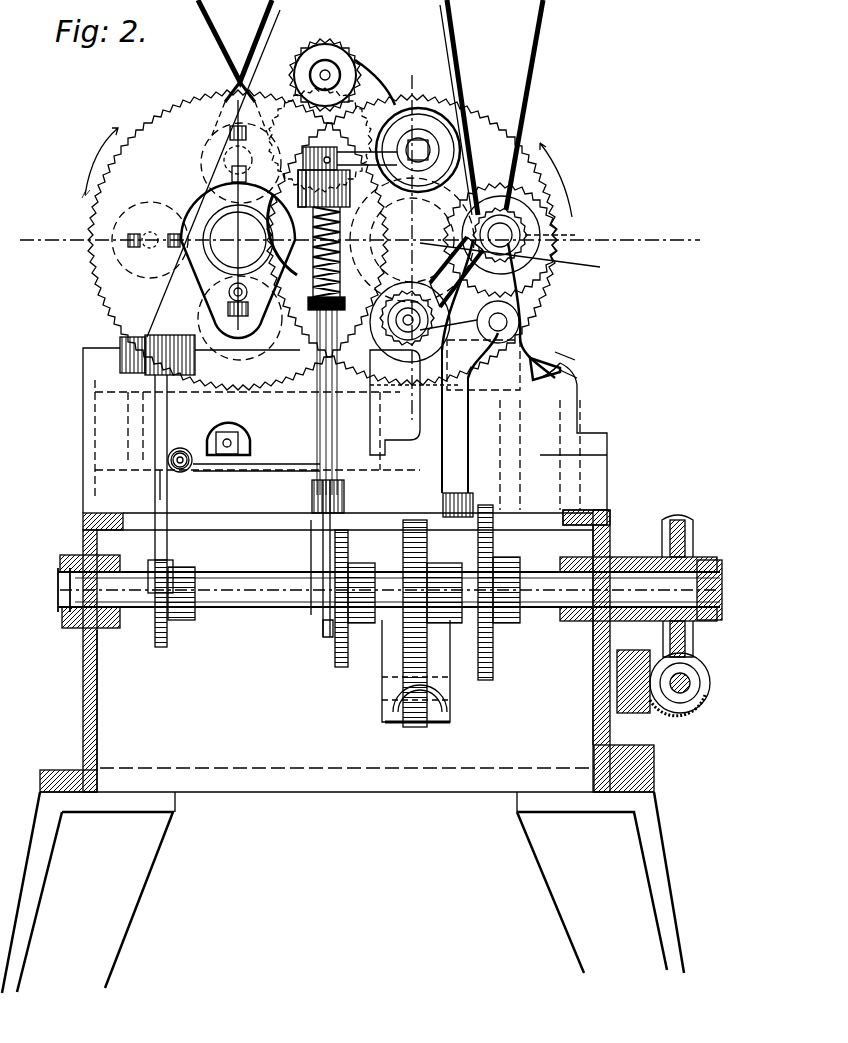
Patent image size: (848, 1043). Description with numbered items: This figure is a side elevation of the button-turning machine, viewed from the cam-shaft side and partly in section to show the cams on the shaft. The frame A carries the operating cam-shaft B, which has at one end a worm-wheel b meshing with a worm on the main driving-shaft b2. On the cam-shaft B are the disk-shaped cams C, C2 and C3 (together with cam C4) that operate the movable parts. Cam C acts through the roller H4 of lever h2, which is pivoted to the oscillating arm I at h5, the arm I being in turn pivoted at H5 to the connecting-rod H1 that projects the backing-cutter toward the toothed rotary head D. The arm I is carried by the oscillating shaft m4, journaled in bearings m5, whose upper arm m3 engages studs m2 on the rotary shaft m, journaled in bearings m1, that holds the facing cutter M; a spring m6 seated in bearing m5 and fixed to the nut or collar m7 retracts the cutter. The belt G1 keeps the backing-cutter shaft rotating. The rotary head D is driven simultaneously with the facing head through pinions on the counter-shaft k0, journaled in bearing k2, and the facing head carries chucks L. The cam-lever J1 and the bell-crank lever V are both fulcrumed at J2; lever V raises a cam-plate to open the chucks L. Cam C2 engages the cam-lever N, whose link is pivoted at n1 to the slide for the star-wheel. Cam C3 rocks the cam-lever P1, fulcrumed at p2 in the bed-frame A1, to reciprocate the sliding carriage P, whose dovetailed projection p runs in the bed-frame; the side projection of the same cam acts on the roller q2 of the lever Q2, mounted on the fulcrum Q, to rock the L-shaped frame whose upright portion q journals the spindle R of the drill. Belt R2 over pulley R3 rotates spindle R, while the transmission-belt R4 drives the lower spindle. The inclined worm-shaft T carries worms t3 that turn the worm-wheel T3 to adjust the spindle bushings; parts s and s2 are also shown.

The belt G1 is at (210, 30).
The toothed rotary head or gear-wheel D is at (160, 135).
The counter-shaft k0 is at (330, 68).
The cutter M is at (350, 62).
The bearing k2 is at (362, 120).
The oscillating arm m3 is at (410, 96).
The chuck L is at (440, 115).
The studs m2 is at (432, 140).
The rotary shaft m is at (428, 160).
The bearings m1 is at (425, 168).
The belt R2 is at (535, 92).
The transmission-belt R4 is at (555, 150).
The pulley R3 is at (553, 205).
The worm-wheel T3 is at (498, 210).
The inclined worm-shaft T is at (565, 237).
The worms t3 is at (575, 240).
The belt s is at (560, 270).
The upright portion q is at (570, 282).
The fulcrum Q is at (555, 290).
The spindle R is at (510, 268).
The bearings m5 is at (308, 150).
The spring m6 is at (412, 240).
The nut or collar m7 is at (412, 240).
The oscillating shaft m4 is at (415, 395).
The spring s2 is at (400, 362).
The sliding carriage P is at (535, 360).
The pivot n1 is at (563, 355).
The dovetailed projection p is at (566, 368).
The fulcrum p2 is at (580, 386).
The bed-frame A1 is at (578, 413).
The pivot H5 is at (120, 360).
The connecting-rod H1 is at (200, 447).
The lever h2 is at (160, 480).
The pivot h5 is at (185, 472).
The oscillating arm I is at (262, 466).
The pivot J2 is at (360, 455).
The lever Q2 is at (460, 462).
The antifriction-roller q2 is at (446, 503).
The cam-lever P1 is at (540, 517).
The worm-wheel b is at (693, 535).
The main driving-shaft b2 is at (708, 672).
The roller H4 is at (178, 565).
The cam C is at (162, 642).
The lever V is at (322, 552).
The gear C4 is at (340, 665).
The cam-lever J1 is at (360, 548).
The cam C2 is at (420, 555).
The cam-lever N is at (400, 640).
The cam C3 is at (485, 672).
The cam-shaft B is at (232, 608).
The frame A is at (359, 751).